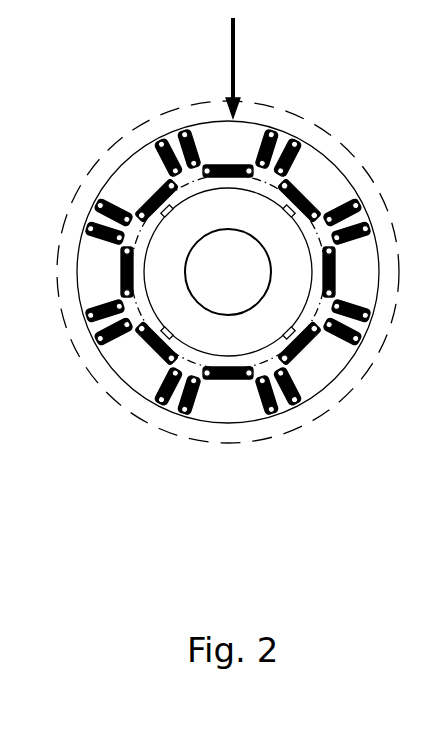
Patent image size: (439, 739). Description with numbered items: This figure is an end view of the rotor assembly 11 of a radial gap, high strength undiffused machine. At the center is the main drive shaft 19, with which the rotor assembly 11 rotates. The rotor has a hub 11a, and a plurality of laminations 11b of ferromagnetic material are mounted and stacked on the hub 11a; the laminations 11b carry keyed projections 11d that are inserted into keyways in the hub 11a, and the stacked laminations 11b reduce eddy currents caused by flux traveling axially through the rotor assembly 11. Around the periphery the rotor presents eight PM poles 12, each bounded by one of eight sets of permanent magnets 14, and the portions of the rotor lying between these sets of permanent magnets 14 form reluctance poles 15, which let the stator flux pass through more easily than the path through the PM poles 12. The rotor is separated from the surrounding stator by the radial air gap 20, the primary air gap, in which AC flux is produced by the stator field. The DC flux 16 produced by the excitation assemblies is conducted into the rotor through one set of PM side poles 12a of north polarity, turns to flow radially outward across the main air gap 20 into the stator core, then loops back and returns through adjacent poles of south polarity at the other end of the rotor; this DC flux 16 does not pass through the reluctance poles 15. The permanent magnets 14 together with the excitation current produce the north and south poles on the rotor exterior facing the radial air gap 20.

The rotor assembly 11 is at (252, 223).
The hub 11a is at (243, 302).
The laminations 11b is at (228, 272).
The keyed projections 11d is at (197, 214).
The PM poles 12 is at (228, 240).
The PM side poles of N polarity 12a is at (320, 175).
The permanent magnets 14 is at (124, 212).
The reluctance poles 15 is at (289, 130).
The DC flux 16 is at (236, 80).
The main drive shaft 19 is at (239, 278).
The radial air gap 20 is at (243, 437).